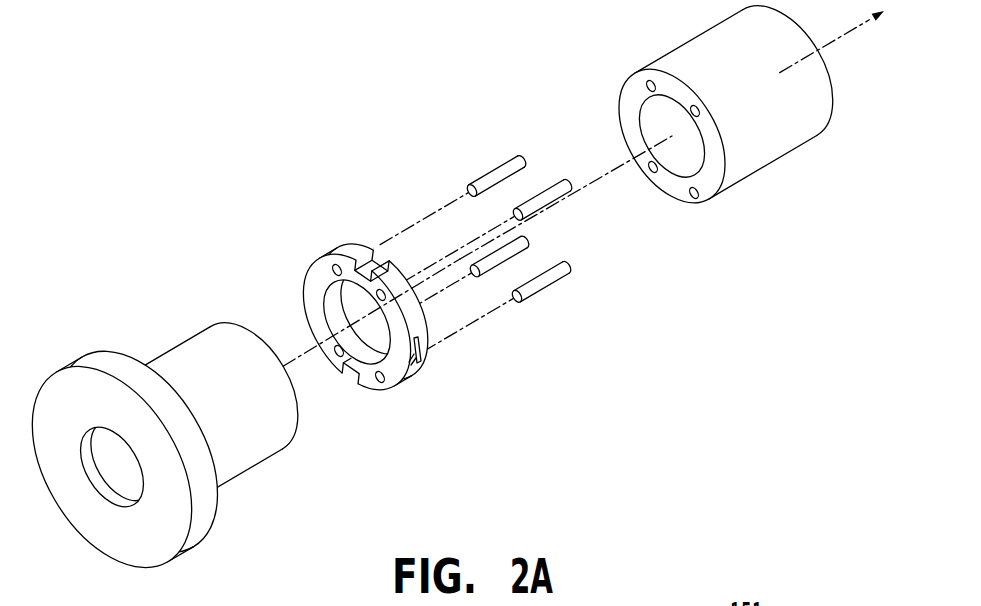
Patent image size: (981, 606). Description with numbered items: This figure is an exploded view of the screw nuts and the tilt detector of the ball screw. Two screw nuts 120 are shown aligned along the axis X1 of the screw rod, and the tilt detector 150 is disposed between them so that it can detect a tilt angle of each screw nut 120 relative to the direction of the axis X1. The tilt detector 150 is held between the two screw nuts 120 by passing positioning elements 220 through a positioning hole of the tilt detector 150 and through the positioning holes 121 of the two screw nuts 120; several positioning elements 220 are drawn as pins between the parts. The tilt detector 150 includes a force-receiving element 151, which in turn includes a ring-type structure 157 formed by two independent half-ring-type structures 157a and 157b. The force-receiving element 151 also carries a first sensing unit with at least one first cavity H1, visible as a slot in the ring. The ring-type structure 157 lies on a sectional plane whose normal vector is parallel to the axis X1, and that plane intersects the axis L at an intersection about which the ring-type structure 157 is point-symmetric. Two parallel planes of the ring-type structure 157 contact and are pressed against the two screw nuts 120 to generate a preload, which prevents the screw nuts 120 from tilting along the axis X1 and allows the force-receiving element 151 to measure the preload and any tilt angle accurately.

The screw nut 120 is at (748, 140).
The positioning hole 121 is at (688, 197).
The tilt detector 150 is at (368, 269).
The force-receiving element 151 is at (323, 268).
The positioning element 220 is at (543, 283).
The first cavity H1 is at (428, 361).
The axis L is at (853, 32).
The axis of the screw rod X1 is at (604, 183).
The ring-type structure 157 is at (848, 541).
The half-ring-type structure 157a is at (884, 554).
The half-ring-type structure 157b is at (884, 587).